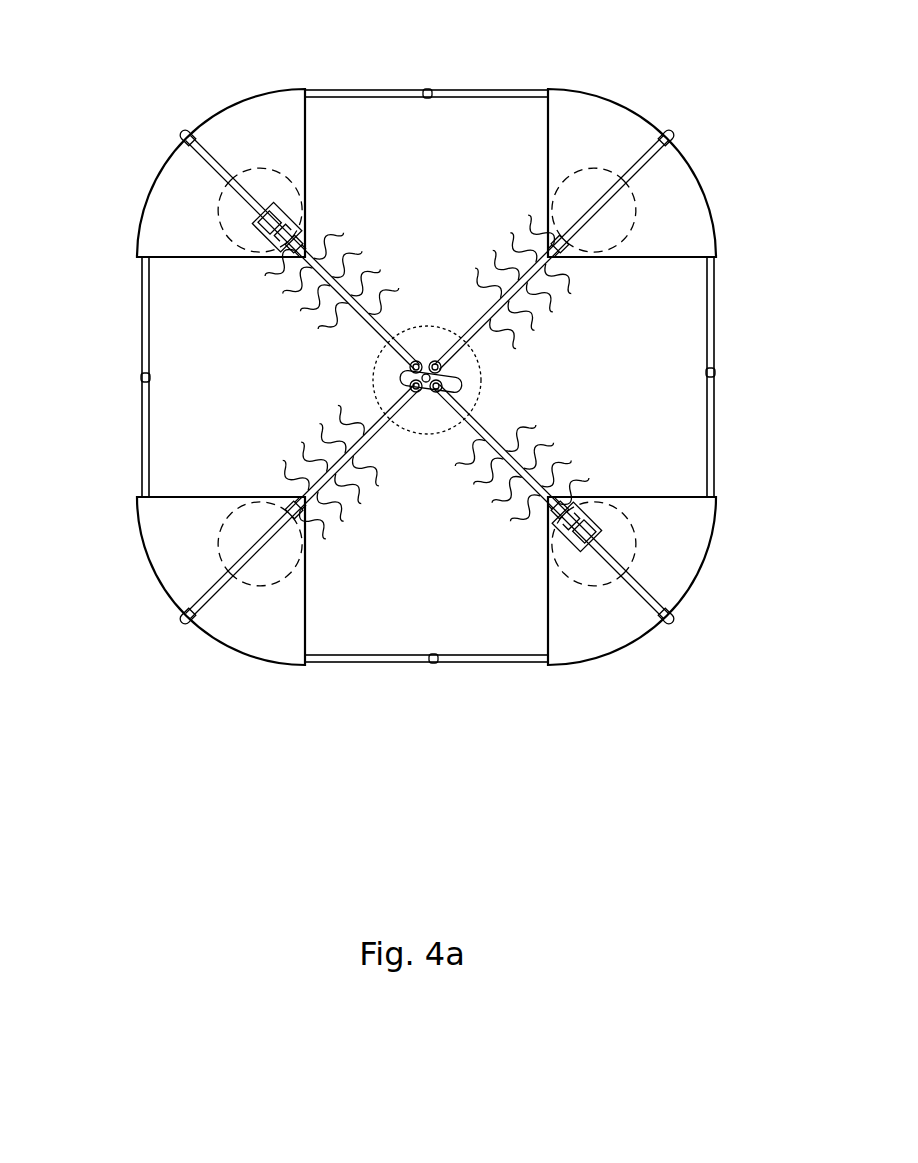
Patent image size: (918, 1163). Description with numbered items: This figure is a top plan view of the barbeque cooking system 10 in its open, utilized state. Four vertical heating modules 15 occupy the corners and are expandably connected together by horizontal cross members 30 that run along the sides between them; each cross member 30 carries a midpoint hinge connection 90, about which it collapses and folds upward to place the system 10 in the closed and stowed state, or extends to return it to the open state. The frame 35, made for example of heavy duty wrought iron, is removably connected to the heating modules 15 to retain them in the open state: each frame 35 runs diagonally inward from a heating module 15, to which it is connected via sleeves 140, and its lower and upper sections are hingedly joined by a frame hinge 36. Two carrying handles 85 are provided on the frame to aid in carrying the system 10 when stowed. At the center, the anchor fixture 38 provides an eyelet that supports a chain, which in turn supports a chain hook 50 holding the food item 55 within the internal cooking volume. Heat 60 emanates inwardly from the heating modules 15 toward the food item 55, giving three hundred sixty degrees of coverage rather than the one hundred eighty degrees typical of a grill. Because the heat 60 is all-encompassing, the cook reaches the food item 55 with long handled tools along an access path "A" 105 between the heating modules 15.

The barbeque cooking system 10 is at (192, 745).
The vertical heating module 15 is at (153, 170).
The horizontal cross member 30 is at (520, 90).
The frame 35 is at (380, 323).
The frame hinge 36 is at (292, 247).
The anchor fixture 38 is at (420, 395).
The chain hook 50 is at (458, 387).
The food item 55 is at (478, 363).
The heat 60 is at (328, 233).
The carrying handle 85 is at (285, 200).
The midpoint hinge connection 90 is at (427, 91).
The access path "A" 105 is at (450, 120).
The sleeve 140 is at (183, 128).